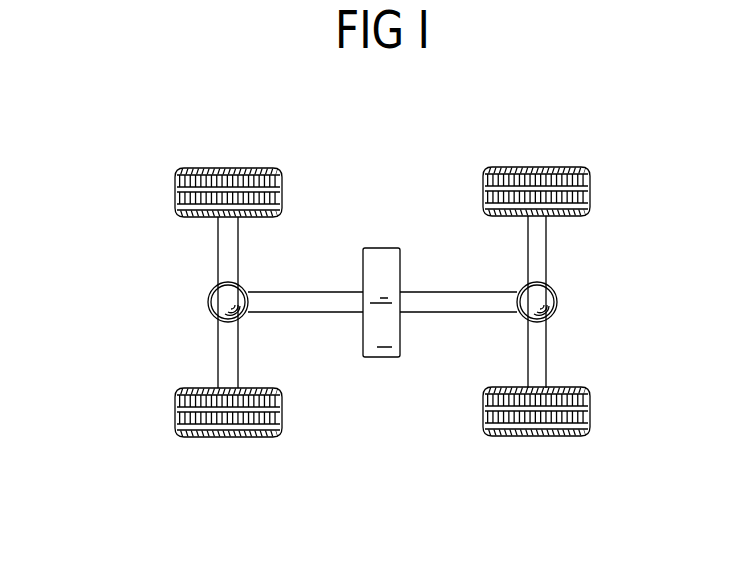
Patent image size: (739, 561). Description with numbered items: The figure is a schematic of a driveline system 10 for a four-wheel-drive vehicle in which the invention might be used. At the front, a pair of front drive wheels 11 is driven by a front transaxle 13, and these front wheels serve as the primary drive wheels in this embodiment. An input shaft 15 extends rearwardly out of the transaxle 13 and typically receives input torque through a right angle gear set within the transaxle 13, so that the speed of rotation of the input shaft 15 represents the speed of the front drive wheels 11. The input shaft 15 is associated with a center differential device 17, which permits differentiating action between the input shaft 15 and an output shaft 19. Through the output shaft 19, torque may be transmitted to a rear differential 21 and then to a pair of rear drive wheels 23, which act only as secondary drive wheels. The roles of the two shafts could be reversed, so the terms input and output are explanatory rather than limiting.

The driveline system 10 is at (134, 183).
The front drive wheels 11 is at (262, 168).
The front transaxle 13 is at (222, 300).
The input shaft 15 is at (297, 302).
The center differential device 17 is at (386, 222).
The output shaft 19 is at (430, 302).
The rear differential 21 is at (541, 302).
The rear drive wheels 23 is at (537, 166).